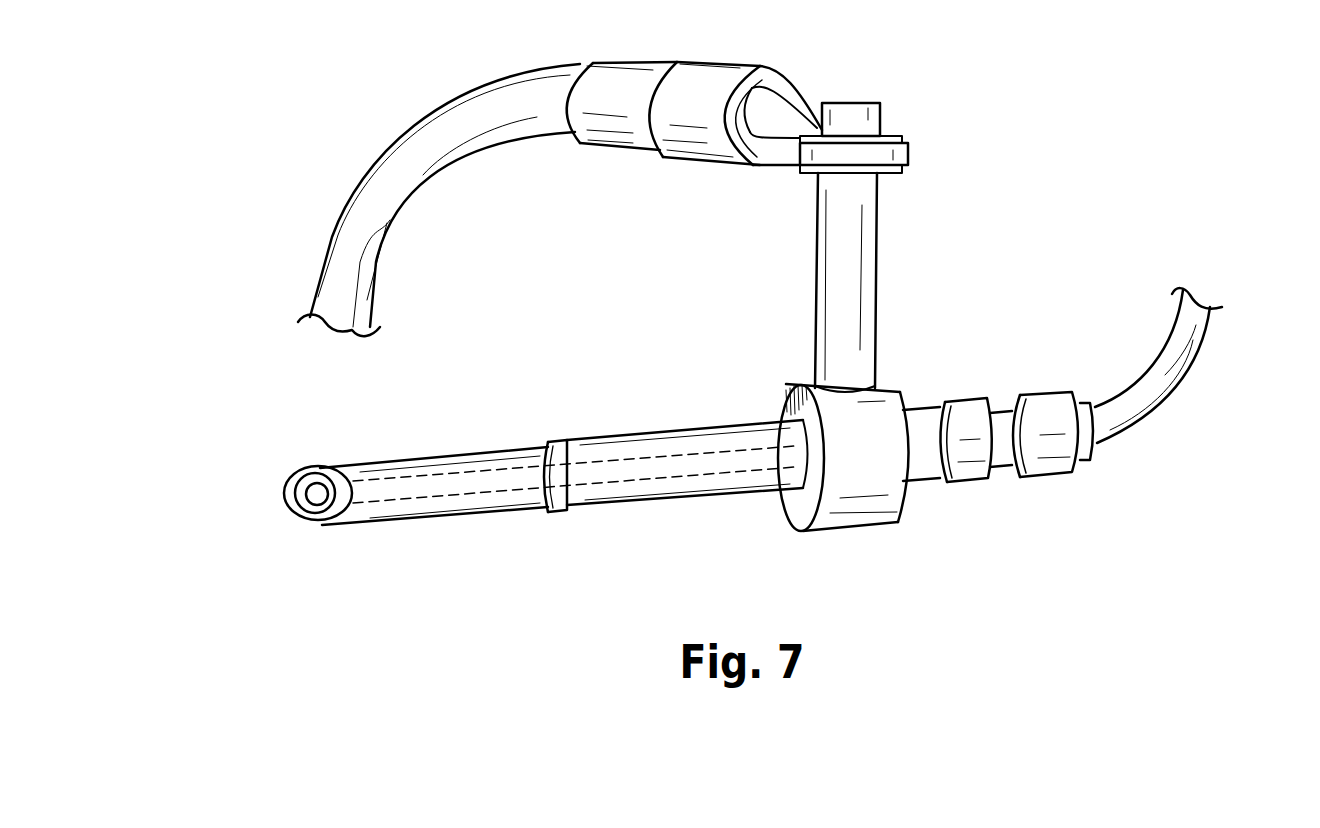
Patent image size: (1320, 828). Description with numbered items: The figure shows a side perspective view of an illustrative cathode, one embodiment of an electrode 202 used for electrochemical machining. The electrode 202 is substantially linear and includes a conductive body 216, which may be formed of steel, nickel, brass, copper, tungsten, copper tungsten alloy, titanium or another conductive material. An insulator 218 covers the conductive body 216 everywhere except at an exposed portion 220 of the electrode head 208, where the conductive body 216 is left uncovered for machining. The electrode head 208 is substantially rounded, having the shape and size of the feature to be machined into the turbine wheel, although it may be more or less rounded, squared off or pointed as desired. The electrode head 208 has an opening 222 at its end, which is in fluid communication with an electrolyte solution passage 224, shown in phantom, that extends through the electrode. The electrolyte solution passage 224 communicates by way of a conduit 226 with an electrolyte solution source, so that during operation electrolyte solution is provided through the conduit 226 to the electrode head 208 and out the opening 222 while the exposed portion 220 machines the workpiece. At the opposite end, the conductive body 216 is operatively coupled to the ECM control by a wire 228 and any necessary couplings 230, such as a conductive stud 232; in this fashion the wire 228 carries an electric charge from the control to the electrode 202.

The electrode 202 is at (520, 527).
The electrode head 208 is at (323, 473).
The conductive body 216 is at (460, 463).
The insulator 218 is at (605, 452).
The exposed portion 220 is at (330, 512).
The opening 222 is at (317, 494).
The electrolyte solution passage 224 is at (633, 482).
The conduit 226 is at (1152, 383).
The wire 228 is at (343, 262).
The couplings 230 is at (867, 218).
The conductive stud 232 is at (870, 423).